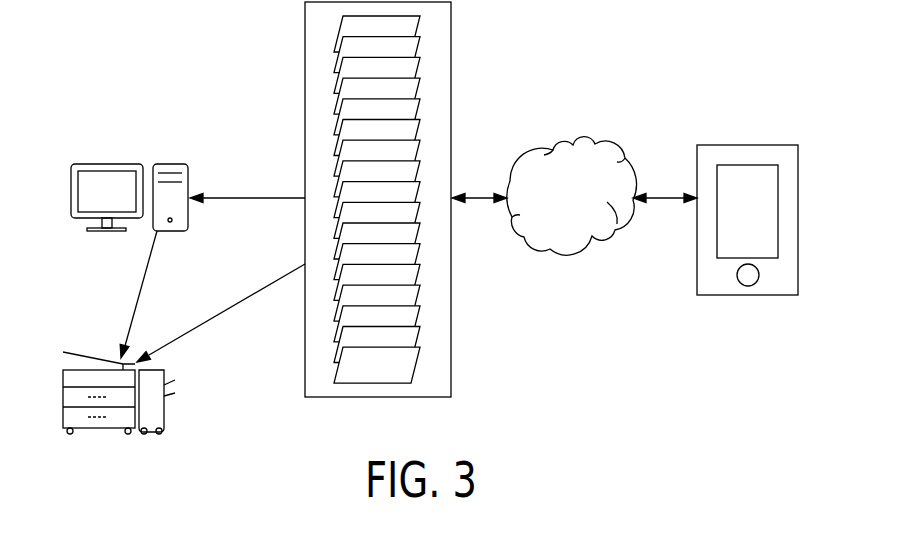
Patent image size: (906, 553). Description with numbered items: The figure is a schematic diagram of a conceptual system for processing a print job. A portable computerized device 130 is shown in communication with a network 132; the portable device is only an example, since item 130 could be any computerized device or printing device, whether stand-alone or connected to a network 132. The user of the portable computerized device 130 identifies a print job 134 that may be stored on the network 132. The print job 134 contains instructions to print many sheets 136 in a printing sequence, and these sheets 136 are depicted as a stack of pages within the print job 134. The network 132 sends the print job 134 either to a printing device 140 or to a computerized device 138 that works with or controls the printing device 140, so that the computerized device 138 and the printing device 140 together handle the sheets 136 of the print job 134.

The portable computerized device 130 is at (748, 296).
The network 132 is at (570, 262).
The print job 134 is at (452, 100).
The sheets 136 is at (327, 106).
The computerized device 138 is at (112, 164).
The printing device 140 is at (78, 370).